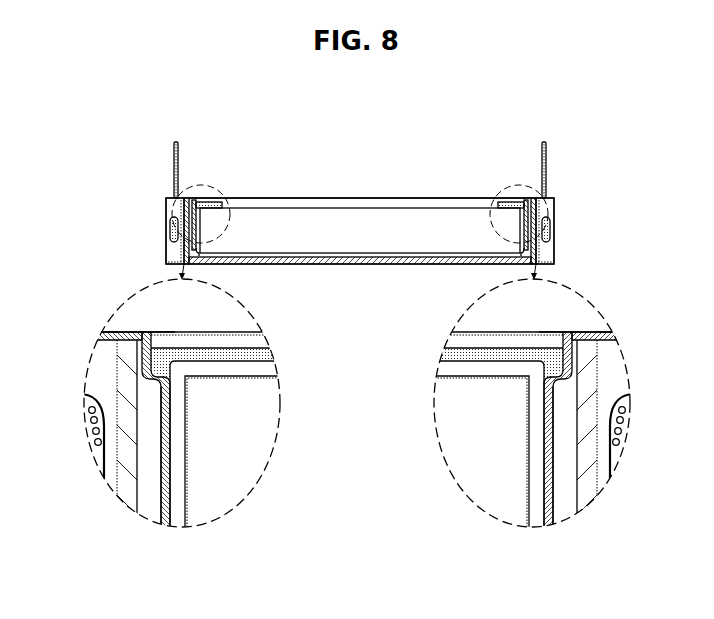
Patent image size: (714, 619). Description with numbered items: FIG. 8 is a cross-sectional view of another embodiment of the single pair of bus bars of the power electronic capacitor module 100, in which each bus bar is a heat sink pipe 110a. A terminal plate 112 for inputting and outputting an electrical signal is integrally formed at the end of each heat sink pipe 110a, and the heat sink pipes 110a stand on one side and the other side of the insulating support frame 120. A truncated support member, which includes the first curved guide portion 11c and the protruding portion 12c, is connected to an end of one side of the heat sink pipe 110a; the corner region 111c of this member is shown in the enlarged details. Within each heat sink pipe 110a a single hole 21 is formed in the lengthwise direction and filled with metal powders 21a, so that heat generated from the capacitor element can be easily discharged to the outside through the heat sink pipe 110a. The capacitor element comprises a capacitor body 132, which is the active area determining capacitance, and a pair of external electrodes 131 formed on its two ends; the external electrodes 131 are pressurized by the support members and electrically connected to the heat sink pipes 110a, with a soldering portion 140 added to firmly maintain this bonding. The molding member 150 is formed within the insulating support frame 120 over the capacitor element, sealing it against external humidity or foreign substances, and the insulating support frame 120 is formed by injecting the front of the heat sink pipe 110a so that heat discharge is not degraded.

The power electronic capacitor module 100 is at (358, 116).
The terminal plate 112 is at (177, 141).
The heat sink pipe 110a is at (167, 206).
The hole 21 is at (171, 231).
The metal powders 21a is at (96, 444).
The insulating support frame 120 is at (336, 266).
The molding member 150 is at (343, 207).
The external electrode 131 is at (452, 350).
The soldering portion 140 is at (450, 346).
The capacitor body 132 is at (450, 430).
The protruding portion 12c is at (162, 490).
The first curved guide portion 11c is at (158, 333).
The corner portion 111c is at (109, 331).